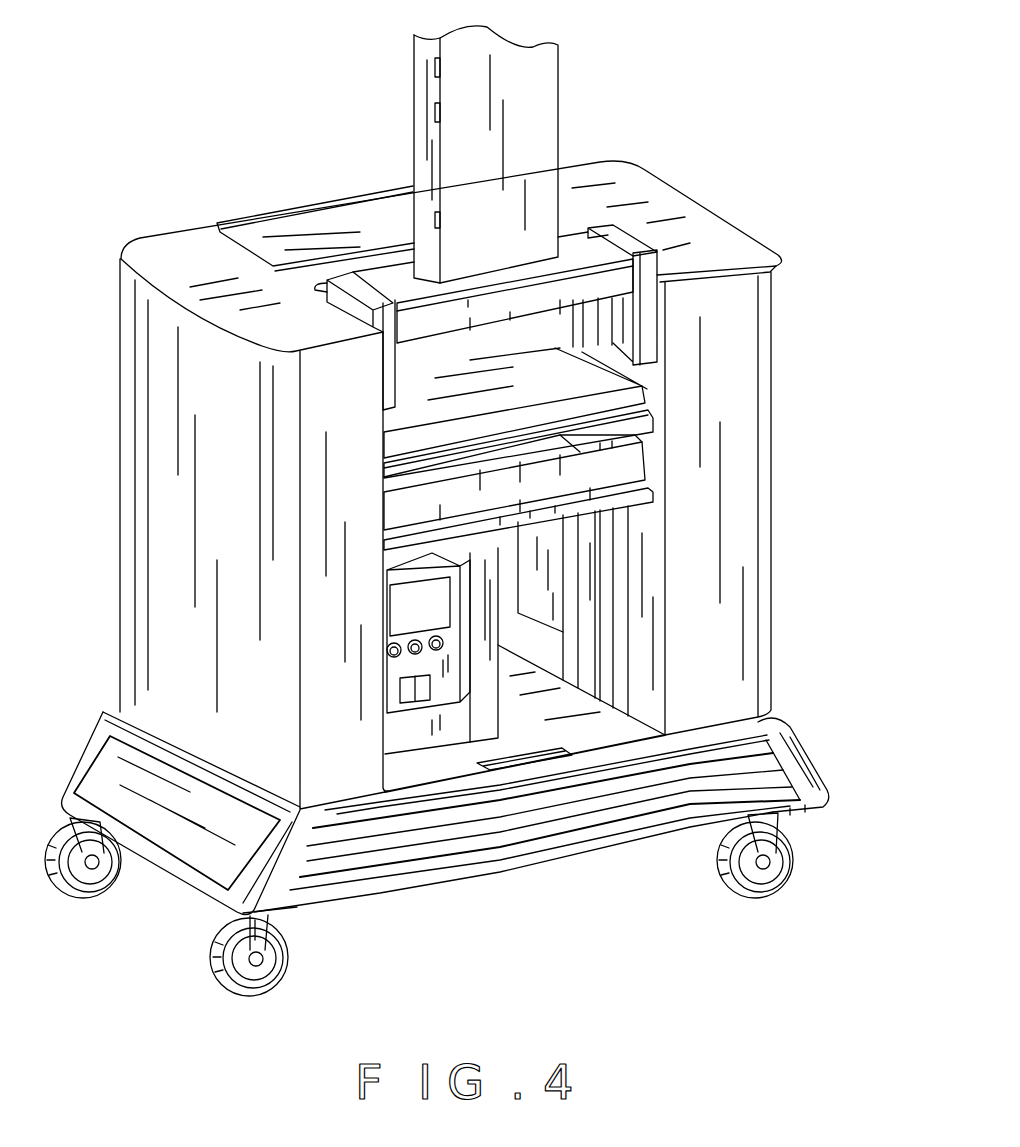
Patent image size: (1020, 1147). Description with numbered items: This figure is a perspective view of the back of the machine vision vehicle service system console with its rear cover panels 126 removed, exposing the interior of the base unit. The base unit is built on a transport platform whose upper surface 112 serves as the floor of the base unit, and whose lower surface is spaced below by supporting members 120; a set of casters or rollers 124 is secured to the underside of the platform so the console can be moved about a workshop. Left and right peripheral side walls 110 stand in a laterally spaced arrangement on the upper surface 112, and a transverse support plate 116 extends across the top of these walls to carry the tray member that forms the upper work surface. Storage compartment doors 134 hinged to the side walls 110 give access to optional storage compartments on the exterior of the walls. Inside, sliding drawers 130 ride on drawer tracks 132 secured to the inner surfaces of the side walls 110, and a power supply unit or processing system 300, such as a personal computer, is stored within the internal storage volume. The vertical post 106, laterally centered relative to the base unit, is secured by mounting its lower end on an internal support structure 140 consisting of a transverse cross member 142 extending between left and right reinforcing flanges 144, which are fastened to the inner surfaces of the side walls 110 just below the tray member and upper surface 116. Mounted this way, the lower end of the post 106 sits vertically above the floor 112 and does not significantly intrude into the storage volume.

The vertical post 106 is at (560, 110).
The peripheral side walls 110 is at (647, 697).
The upper surface of the transport platform 112 is at (533, 723).
The transverse support plate 116 is at (215, 270).
The supporting members 120 is at (148, 800).
The casters or rollers 124 is at (82, 921).
The rear cover panels 126 is at (735, 652).
The sliding drawers 130 is at (448, 388).
The drawer tracks 132 is at (650, 415).
The storage compartment doors 134 is at (215, 605).
The internal support structure 140 is at (390, 265).
The transverse cross member 142 is at (600, 262).
The reinforcing flanges 144 is at (340, 290).
The processing system 300 is at (420, 727).